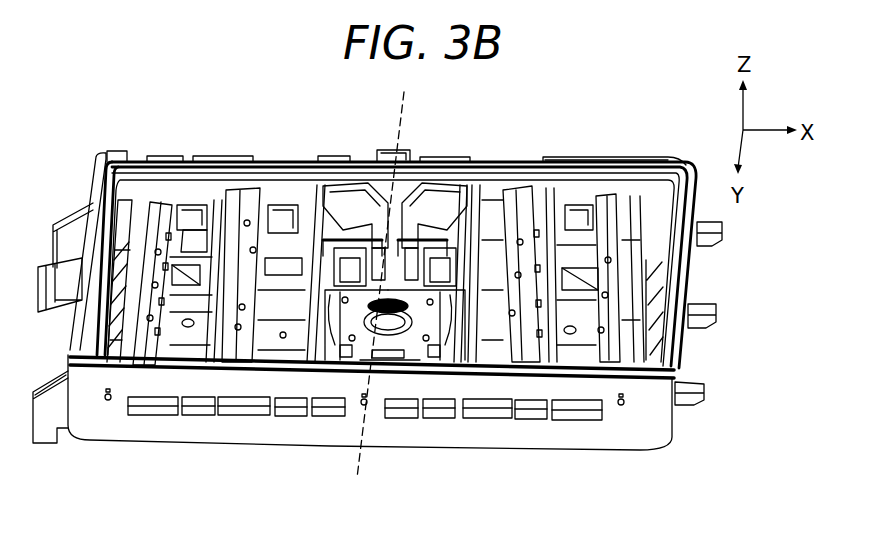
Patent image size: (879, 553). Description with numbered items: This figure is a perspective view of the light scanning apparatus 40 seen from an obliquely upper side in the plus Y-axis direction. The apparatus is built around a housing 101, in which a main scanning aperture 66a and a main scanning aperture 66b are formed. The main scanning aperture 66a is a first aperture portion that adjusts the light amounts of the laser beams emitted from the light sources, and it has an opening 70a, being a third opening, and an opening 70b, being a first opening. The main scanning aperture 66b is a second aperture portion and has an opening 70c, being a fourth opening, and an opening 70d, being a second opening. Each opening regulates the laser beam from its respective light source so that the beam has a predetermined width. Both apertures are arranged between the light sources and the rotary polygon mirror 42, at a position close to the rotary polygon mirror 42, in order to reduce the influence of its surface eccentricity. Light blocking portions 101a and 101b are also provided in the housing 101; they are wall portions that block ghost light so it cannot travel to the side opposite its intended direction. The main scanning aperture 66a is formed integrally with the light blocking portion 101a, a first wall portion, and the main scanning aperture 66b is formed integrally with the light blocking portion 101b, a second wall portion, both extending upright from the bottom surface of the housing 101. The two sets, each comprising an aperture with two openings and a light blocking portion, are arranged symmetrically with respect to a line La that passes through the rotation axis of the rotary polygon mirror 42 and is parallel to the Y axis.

The light scanning apparatus 40 is at (377, 300).
The rotary polygon mirror 42 is at (378, 345).
The main scanning aperture 66a is at (345, 235).
The main scanning aperture 66b is at (403, 252).
The opening 70a is at (325, 322).
The opening 70b is at (357, 328).
The opening 70c is at (440, 330).
The opening 70d is at (406, 340).
The housing 101 is at (572, 166).
The light blocking portion 101a is at (378, 247).
The light blocking portion 101b is at (393, 240).
The line La is at (376, 297).